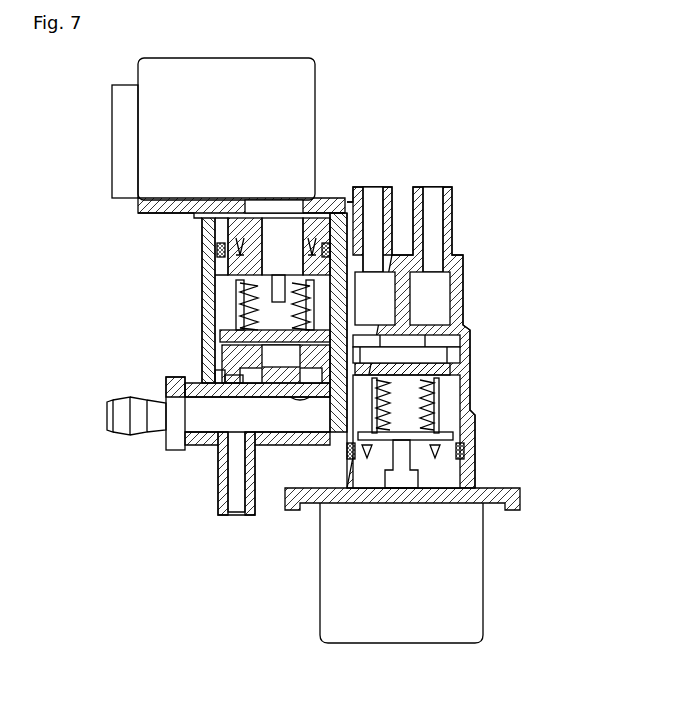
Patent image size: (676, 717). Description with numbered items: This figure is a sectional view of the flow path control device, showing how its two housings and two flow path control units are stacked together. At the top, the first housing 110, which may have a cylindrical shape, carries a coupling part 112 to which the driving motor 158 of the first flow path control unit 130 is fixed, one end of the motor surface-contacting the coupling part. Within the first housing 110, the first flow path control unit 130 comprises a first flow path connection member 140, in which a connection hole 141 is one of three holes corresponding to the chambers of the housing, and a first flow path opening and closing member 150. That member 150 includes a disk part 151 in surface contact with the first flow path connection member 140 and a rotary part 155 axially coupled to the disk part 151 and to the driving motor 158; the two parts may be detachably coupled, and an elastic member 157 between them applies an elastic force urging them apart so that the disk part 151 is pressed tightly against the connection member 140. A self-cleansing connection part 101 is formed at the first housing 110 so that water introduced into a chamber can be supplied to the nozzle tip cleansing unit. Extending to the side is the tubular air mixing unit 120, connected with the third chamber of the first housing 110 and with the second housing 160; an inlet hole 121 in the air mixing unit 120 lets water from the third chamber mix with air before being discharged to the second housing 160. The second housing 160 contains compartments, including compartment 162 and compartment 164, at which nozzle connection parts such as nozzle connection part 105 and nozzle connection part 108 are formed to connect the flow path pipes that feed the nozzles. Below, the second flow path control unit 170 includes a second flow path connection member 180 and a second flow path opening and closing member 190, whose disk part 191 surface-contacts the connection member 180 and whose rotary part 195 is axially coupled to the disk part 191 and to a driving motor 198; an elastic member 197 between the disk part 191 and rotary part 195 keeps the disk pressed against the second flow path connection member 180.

The self-cleansing connection part 101 is at (222, 502).
The nozzle connection part 105 is at (438, 188).
The nozzle connection part 108 is at (380, 188).
The first housing 110 is at (200, 236).
The coupling part 112 is at (152, 206).
The air mixing unit 120 is at (190, 440).
The inlet hole 121 is at (303, 400).
The first flow path control unit 130 is at (268, 243).
The first flow path connection member 140 is at (238, 354).
The connection hole 141 is at (222, 374).
The first flow path opening and closing member 150 is at (107, 246).
The disk part 151 is at (228, 330).
The rotary part 155 is at (218, 252).
The elastic member 157 is at (242, 297).
The driving motor 158 is at (143, 124).
The second housing 160 is at (463, 297).
The compartment 162 is at (383, 288).
The compartment 164 is at (437, 288).
The second flow path control unit 170 is at (403, 477).
The second flow path connection member 180 is at (447, 352).
The second flow path opening and closing member 190 is at (545, 385).
The disk part 191 is at (433, 382).
The rotary part 195 is at (456, 455).
The elastic member 197 is at (432, 420).
The driving motor 198 is at (400, 642).